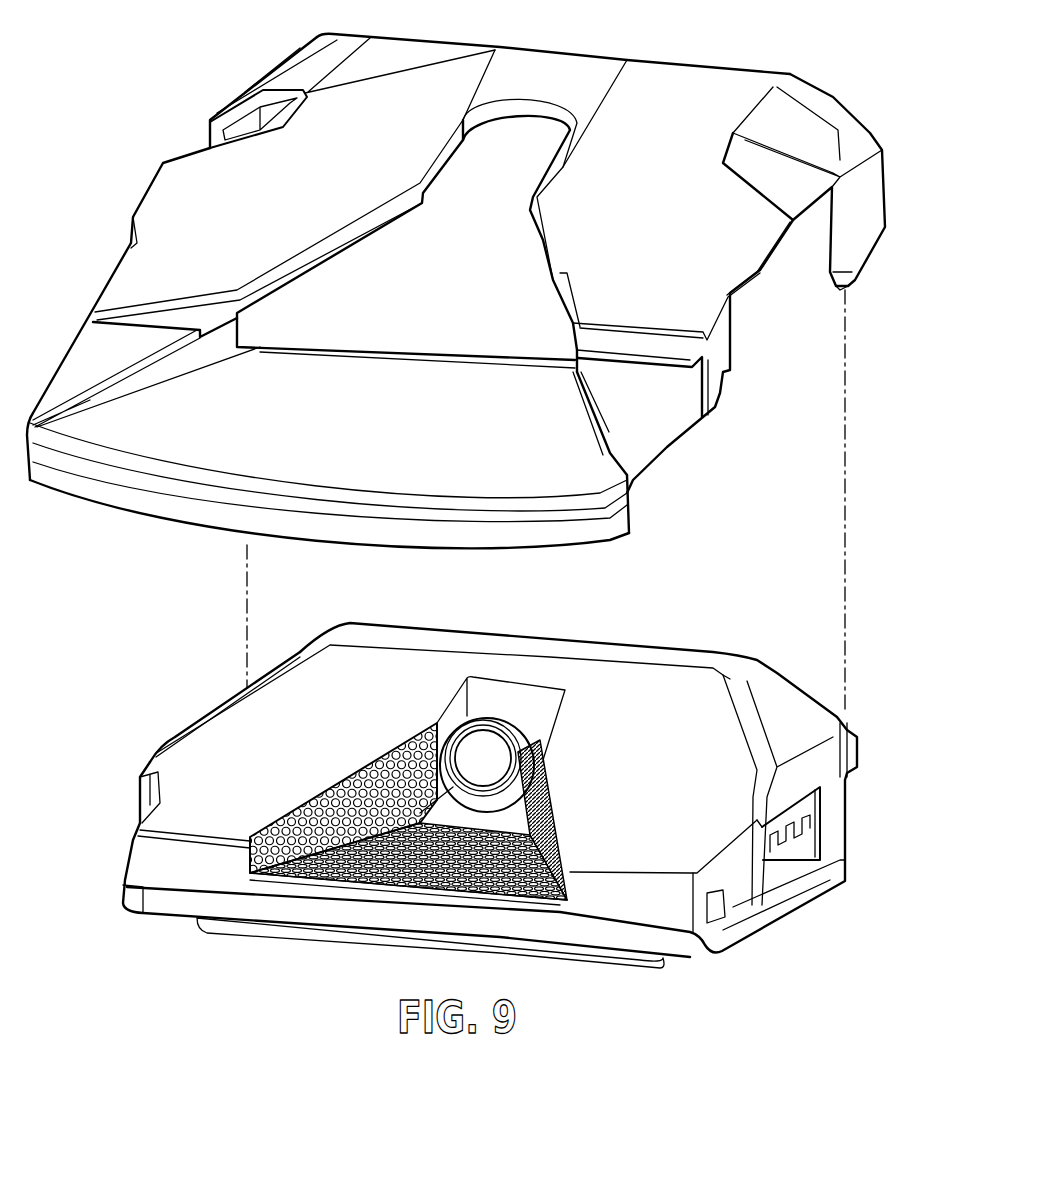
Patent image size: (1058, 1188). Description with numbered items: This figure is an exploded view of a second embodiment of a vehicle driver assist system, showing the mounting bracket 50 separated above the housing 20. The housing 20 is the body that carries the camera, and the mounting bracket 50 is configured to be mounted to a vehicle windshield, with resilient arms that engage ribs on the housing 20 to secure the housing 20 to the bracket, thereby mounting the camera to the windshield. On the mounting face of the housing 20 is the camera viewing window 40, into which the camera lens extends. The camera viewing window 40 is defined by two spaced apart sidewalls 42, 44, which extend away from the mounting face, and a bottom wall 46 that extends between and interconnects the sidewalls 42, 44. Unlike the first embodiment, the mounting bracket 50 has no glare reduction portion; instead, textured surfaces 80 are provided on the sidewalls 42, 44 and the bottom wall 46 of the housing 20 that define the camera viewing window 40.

The mounting bracket 50 is at (713, 107).
The housing 20 is at (790, 697).
The camera viewing window 40 is at (521, 718).
The sidewall 44 is at (523, 792).
The sidewall 42 is at (350, 790).
The textured surfaces 80 is at (313, 878).
The bottom wall 46 is at (447, 897).